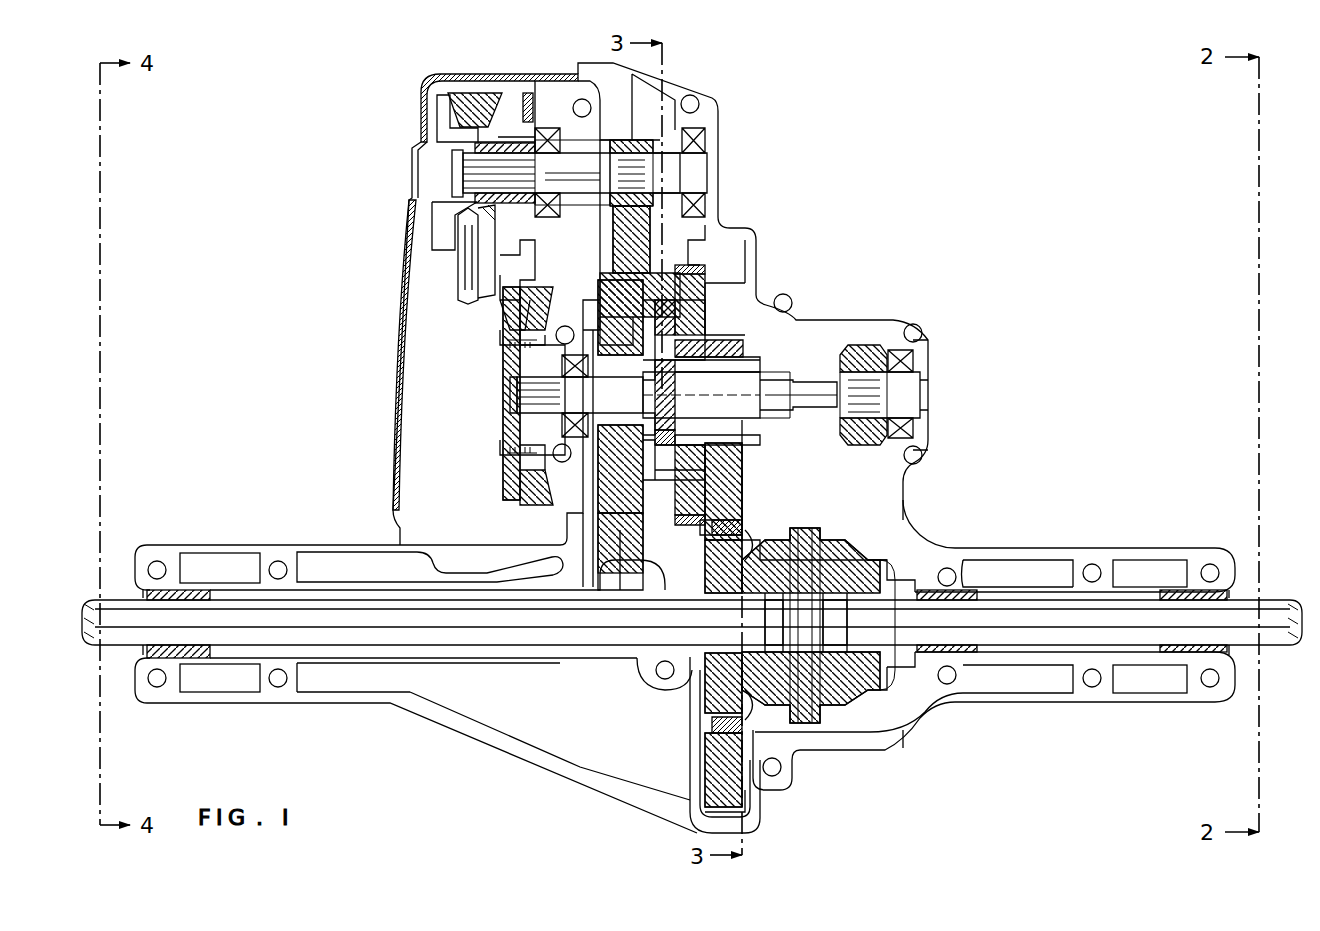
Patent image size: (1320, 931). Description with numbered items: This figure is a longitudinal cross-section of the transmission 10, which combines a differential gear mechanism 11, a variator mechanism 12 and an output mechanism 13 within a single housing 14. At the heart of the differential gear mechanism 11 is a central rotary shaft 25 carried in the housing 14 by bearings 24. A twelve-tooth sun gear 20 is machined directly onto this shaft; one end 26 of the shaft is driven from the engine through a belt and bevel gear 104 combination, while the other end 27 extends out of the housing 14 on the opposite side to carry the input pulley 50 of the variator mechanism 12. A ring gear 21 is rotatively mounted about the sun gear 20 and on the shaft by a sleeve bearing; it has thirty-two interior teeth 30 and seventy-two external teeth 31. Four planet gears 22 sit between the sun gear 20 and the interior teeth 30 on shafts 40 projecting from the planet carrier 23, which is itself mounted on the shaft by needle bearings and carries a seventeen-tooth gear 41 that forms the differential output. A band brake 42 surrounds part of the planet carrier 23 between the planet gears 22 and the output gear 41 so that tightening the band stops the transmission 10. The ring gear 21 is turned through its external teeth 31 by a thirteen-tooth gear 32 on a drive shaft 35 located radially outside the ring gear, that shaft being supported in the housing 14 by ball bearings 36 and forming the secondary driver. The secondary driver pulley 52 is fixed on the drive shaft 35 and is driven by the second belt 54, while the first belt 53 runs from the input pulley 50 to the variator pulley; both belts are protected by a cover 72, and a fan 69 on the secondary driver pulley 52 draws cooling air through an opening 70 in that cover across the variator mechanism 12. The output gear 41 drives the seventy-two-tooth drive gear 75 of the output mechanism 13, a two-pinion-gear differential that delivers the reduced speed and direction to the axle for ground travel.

The transmission 10 is at (818, 298).
The differential gear mechanism 11 is at (758, 482).
The variator mechanism 12 is at (500, 340).
The output mechanism 13 is at (668, 706).
The housing 14 is at (918, 506).
The sun gear 20 is at (668, 423).
The ring gear 21 is at (655, 252).
The planet gear 22 is at (705, 309).
The planet carrier 23 is at (705, 294).
The bearings 24 is at (915, 364).
The central rotary shaft 25 is at (808, 385).
The end of central rotary shaft 26 is at (692, 511).
The other end of central rotary shaft 27 is at (608, 399).
The interior teeth 30 is at (626, 435).
The external teeth 31 is at (663, 239).
The thirteen tooth gear 32 is at (628, 140).
The drive shaft 35 is at (597, 181).
The ball bearings 36 is at (705, 140).
The shafts 40 is at (705, 338).
The seventeen tooth gear 41 is at (735, 440).
The band brake 42 is at (700, 264).
The input pulley 50 is at (503, 486).
The secondary driver pulley 52 is at (455, 92).
The belt 53 is at (535, 500).
The second belt 54 is at (467, 273).
The fan 69 is at (438, 125).
The opening 70 is at (415, 185).
The cover 72 is at (396, 428).
The drive gear 75 is at (712, 785).
The bevel gear 104 is at (858, 445).